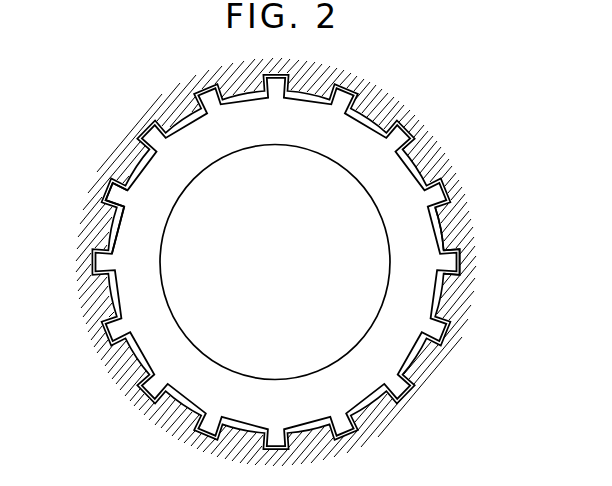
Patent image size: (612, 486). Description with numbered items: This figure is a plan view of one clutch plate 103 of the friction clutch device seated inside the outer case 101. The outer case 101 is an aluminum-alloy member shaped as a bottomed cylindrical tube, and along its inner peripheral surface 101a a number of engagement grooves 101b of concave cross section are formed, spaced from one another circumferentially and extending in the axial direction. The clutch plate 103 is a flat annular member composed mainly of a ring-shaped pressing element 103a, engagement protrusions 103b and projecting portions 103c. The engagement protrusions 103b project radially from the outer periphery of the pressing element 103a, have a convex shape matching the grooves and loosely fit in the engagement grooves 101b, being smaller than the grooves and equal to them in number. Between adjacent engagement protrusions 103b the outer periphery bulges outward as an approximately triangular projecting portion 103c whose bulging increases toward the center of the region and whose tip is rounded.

The outer case 101 is at (410, 131).
The inner peripheral surface 101a is at (445, 232).
The engagement groove 101b is at (460, 268).
The clutch plate 103 is at (338, 183).
The pressing element 103a is at (389, 262).
The engagement protrusion 103b is at (123, 170).
The projecting portion 103c is at (113, 222).